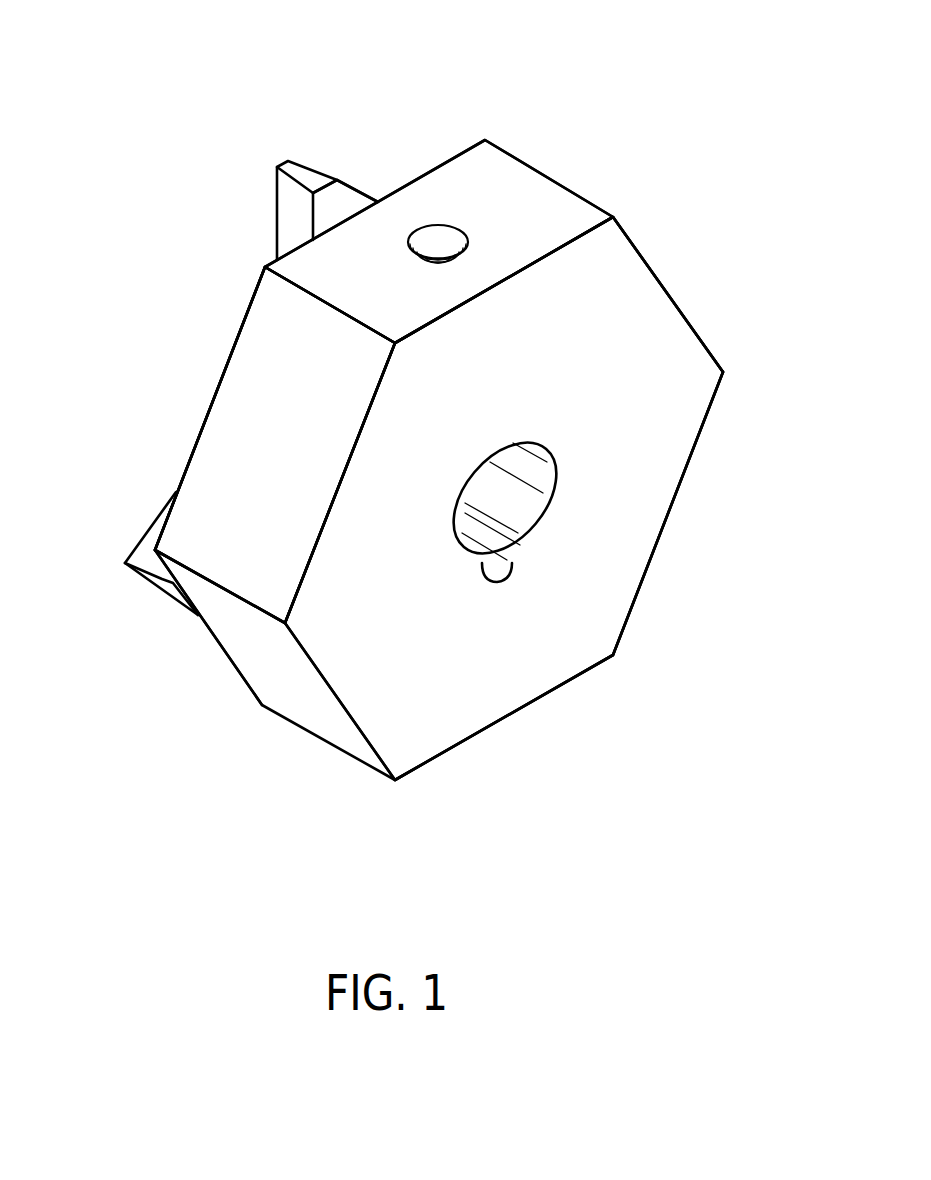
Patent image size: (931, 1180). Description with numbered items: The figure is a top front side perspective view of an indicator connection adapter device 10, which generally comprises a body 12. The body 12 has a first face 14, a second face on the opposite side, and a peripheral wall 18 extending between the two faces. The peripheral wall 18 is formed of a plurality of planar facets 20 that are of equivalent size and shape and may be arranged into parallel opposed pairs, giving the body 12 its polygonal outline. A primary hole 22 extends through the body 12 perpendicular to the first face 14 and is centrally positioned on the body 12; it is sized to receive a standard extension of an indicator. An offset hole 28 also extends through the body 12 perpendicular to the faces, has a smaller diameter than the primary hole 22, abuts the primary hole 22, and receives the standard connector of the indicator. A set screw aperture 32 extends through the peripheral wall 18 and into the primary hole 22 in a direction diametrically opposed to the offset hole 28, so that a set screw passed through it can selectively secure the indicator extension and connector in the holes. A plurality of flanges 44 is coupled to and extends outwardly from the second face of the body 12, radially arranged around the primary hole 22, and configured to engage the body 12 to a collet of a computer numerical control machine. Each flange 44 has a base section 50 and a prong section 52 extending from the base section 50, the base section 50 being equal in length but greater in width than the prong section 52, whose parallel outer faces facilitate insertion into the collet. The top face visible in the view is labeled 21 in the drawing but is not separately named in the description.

The indicator connection adapter device 10 is at (594, 122).
The body 12 is at (192, 403).
The first face 14 is at (680, 428).
The peripheral wall 18 is at (203, 495).
The planar facets 20 is at (672, 292).
The top face 21 is at (498, 165).
The primary hole 22 is at (530, 470).
The offset hole 28 is at (500, 563).
The set screw aperture 32 is at (442, 235).
The flanges 44 is at (342, 156).
The base section 50 is at (360, 197).
The prong section 52 is at (288, 160).